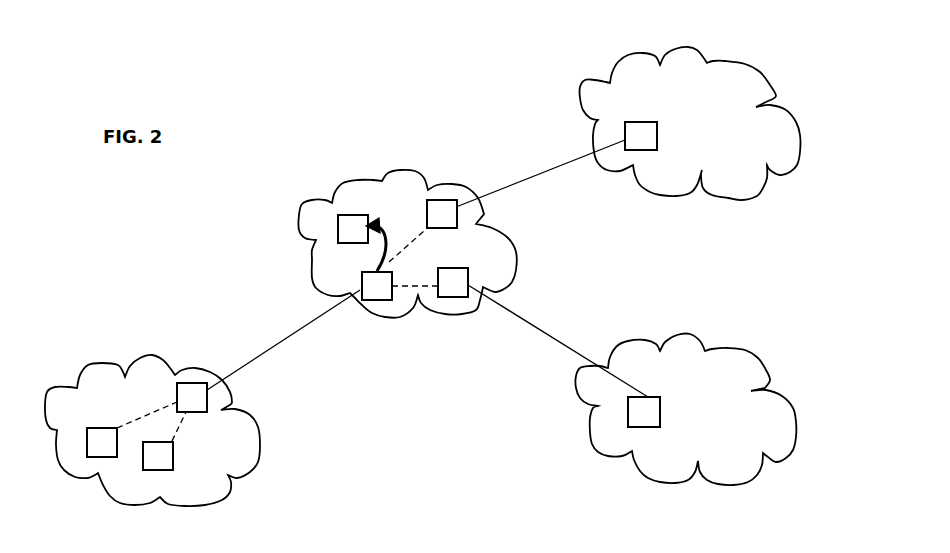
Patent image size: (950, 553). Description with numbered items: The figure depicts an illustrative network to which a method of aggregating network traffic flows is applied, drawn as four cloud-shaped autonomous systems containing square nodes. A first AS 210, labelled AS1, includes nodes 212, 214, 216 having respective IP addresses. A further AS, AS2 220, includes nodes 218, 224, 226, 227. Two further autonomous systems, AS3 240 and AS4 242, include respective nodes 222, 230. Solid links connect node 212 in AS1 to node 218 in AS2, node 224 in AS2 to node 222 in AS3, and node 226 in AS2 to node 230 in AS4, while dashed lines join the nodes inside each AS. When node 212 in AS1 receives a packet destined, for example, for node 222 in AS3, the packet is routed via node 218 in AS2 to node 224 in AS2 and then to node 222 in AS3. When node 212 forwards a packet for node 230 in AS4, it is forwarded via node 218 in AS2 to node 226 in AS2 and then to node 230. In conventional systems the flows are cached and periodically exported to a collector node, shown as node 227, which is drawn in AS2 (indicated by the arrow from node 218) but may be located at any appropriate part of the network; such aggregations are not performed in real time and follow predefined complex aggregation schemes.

The first AS 210 is at (113, 503).
The node 212 is at (177, 398).
The node 214 is at (87, 437).
The node 216 is at (163, 471).
The node 218 is at (373, 269).
The AS2 220 is at (407, 168).
The node 222 is at (657, 127).
The node 224 is at (427, 228).
The node 226 is at (466, 268).
The collector node 227 is at (352, 226).
The node 230 is at (683, 427).
The AS3 240 is at (637, 57).
The AS4 242 is at (838, 398).